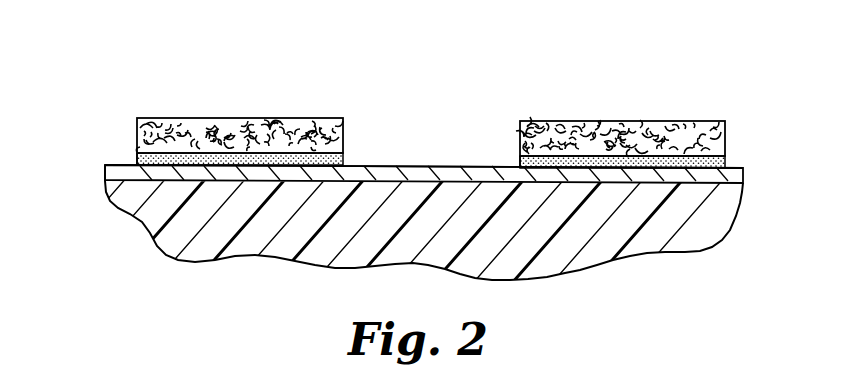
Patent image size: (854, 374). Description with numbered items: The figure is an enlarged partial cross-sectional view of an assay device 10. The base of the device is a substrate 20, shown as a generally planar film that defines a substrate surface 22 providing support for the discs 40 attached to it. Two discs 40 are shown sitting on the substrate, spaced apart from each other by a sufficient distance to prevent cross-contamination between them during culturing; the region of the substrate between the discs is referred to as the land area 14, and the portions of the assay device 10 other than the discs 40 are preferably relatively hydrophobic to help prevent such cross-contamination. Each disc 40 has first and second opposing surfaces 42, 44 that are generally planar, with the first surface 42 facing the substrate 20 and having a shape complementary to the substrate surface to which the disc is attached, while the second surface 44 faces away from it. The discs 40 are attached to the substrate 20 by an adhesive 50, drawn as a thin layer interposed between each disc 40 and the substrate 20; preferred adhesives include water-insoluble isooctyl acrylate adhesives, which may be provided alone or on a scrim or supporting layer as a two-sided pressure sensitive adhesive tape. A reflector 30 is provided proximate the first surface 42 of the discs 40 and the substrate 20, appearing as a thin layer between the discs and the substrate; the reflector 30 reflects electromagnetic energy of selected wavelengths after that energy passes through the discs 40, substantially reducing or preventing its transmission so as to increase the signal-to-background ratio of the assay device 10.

The assay device 10 is at (684, 38).
The land area 14 is at (420, 165).
The substrate 20 is at (432, 255).
The substrate surface 22 is at (105, 178).
The reflector 30 is at (745, 181).
The disc 40 is at (429, 110).
The first surface 42 is at (137, 155).
The second surface 44 is at (232, 118).
The adhesive 50 is at (343, 159).